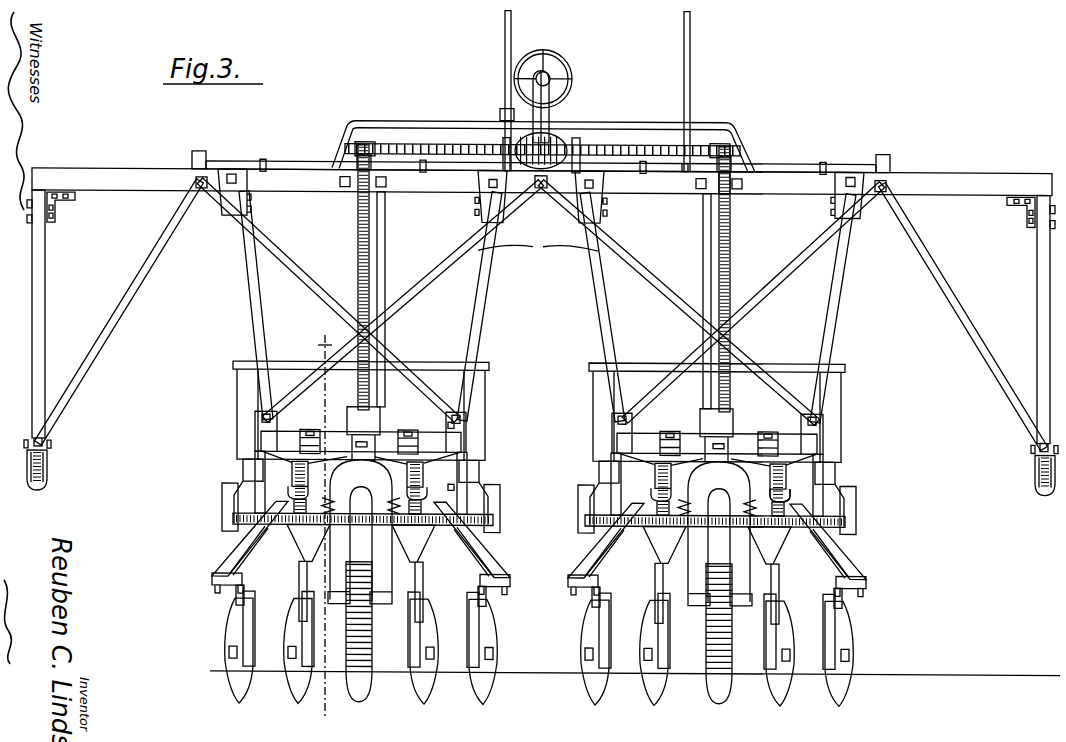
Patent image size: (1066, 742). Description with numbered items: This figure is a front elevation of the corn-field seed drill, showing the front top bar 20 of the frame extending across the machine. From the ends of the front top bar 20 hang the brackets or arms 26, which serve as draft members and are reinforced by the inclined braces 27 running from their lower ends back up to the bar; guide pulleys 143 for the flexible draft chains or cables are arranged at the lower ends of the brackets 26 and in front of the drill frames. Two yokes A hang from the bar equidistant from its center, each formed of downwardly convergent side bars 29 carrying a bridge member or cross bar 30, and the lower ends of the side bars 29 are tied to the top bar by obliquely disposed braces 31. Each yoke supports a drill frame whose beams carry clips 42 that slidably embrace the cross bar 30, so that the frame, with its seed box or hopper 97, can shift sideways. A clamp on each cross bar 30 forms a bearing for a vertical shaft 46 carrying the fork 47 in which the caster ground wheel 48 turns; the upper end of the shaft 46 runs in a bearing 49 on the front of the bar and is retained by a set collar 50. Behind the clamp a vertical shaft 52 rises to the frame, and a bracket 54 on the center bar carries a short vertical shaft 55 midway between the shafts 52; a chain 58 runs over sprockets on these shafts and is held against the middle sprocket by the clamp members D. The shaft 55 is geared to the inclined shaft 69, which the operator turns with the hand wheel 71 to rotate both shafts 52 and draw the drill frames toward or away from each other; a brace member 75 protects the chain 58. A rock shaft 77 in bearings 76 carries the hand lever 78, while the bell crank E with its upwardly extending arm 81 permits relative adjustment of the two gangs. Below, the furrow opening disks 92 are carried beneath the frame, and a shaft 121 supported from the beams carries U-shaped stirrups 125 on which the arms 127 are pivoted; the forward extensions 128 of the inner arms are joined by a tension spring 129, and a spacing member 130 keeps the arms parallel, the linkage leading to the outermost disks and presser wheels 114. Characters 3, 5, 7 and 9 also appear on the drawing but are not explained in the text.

The clamp 3 is at (768, 434).
The seed tube 5 is at (750, 470).
The bolt 7 is at (448, 423).
The section line 9 is at (324, 525).
The front top bar 20 is at (946, 179).
The brackets or arms 26 is at (1038, 319).
The inclined braces 27 is at (118, 316).
The side bars 29 is at (252, 297).
The bridge member or cross bar 30 is at (333, 440).
The obliquely disposed braces 31 is at (436, 272).
The clips 42 is at (309, 428).
The vertical shaft 46 is at (730, 265).
The fork 47 is at (540, 506).
The ground wheel 48 is at (367, 672).
The bearing 49 is at (730, 194).
The set collar 50 is at (343, 153).
The vertical shaft 52 is at (365, 138).
The bracket 54 is at (503, 112).
The short vertical shaft 55 is at (556, 135).
The chain 58 is at (637, 150).
The inclined shaft 69 is at (551, 92).
The hand wheel 71 is at (573, 62).
The brace member 75 is at (455, 107).
The bearings 76 is at (198, 150).
The rock shaft 77 is at (838, 154).
The hand lever 78 is at (511, 29).
The arm 81 is at (690, 44).
The furrow opening disks 92 is at (480, 693).
The seed box or hopper 97 is at (597, 383).
The presser wheel 114 is at (493, 495).
The shaft 121 is at (583, 522).
The U-shaped supporting members or stirrups 125 is at (227, 532).
The arms 127 is at (230, 548).
The forward extensions 128 is at (255, 546).
The tension spring 129 is at (407, 503).
The spacing member 130 is at (573, 575).
The pulleys 143 is at (46, 470).
The yokes A is at (538, 240).
The clamp members D is at (503, 145).
The bell crank E is at (683, 167).